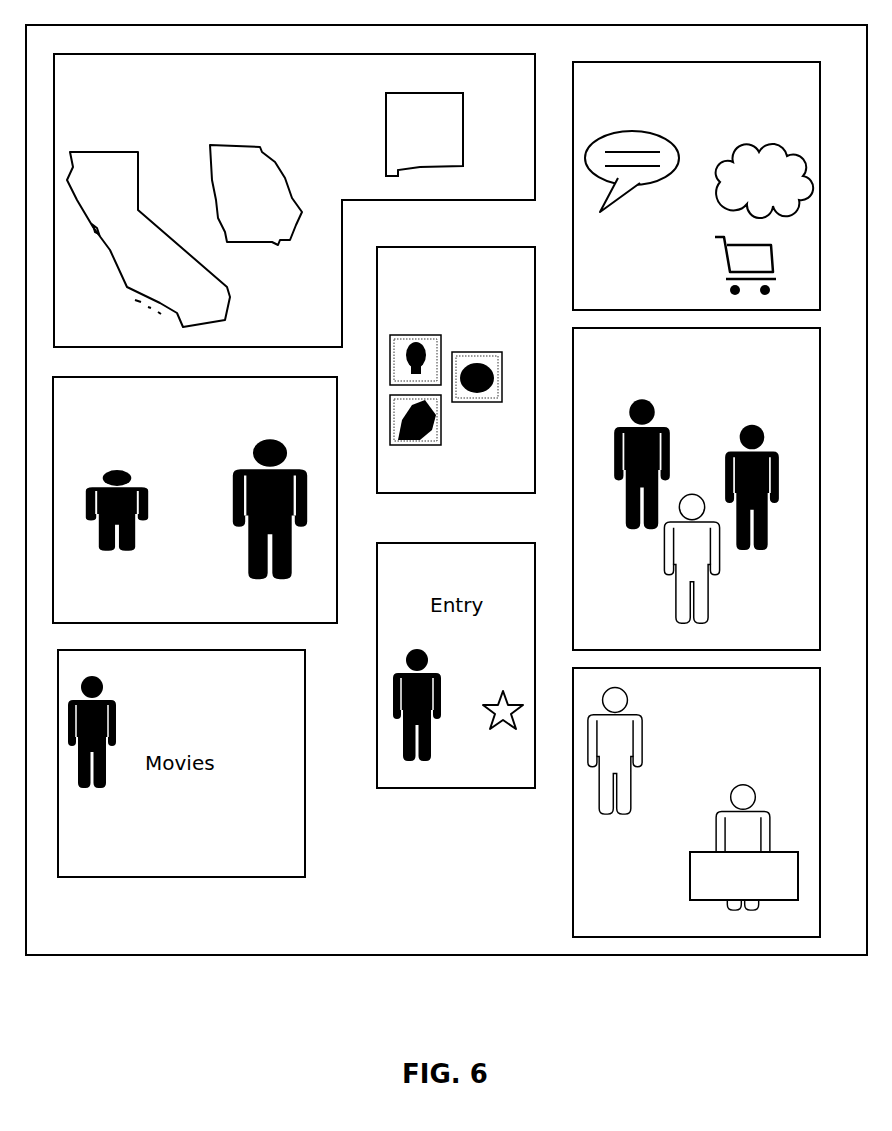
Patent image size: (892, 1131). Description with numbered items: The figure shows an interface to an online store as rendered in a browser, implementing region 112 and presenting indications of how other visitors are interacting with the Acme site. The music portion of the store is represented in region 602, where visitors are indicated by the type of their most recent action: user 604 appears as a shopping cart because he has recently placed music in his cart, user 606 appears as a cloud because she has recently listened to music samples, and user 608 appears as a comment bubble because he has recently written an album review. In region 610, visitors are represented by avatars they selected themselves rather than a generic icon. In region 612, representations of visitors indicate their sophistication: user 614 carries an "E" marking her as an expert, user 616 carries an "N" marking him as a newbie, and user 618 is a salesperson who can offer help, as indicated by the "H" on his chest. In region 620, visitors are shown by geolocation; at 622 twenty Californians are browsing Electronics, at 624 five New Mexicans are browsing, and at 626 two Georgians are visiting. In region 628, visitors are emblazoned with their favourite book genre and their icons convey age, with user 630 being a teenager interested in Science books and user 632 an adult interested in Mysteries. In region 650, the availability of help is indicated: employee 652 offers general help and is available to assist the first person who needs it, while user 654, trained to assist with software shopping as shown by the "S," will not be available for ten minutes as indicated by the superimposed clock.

The region 112 is at (560, 955).
The music region 602 is at (590, 300).
The user 604 is at (724, 257).
The user 606 is at (717, 182).
The user 608 is at (605, 210).
The region 610 is at (478, 478).
The region 612 is at (588, 640).
The user 614 is at (622, 428).
The user 616 is at (768, 452).
The user 618 is at (710, 614).
The region 620 is at (62, 334).
The California indication 622 is at (140, 212).
The New Mexico indication 624 is at (464, 135).
The Georgia indication 626 is at (300, 215).
The region 628 is at (62, 612).
The user 630 is at (148, 503).
The user 632 is at (248, 568).
The region 650 is at (588, 925).
The employee 652 is at (634, 770).
The user 654 is at (688, 853).